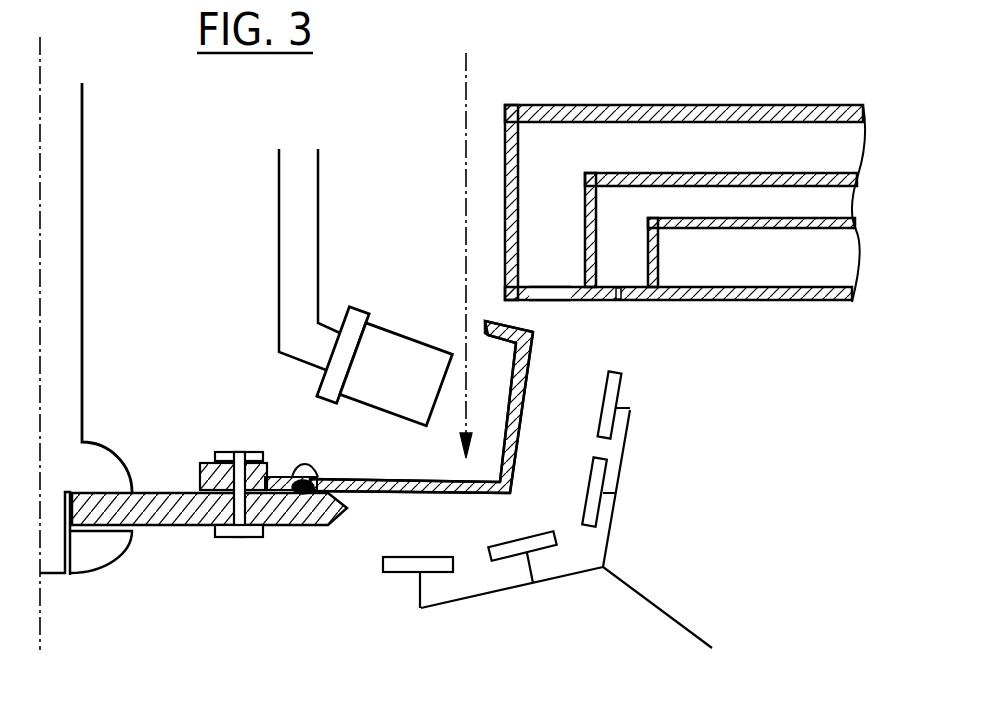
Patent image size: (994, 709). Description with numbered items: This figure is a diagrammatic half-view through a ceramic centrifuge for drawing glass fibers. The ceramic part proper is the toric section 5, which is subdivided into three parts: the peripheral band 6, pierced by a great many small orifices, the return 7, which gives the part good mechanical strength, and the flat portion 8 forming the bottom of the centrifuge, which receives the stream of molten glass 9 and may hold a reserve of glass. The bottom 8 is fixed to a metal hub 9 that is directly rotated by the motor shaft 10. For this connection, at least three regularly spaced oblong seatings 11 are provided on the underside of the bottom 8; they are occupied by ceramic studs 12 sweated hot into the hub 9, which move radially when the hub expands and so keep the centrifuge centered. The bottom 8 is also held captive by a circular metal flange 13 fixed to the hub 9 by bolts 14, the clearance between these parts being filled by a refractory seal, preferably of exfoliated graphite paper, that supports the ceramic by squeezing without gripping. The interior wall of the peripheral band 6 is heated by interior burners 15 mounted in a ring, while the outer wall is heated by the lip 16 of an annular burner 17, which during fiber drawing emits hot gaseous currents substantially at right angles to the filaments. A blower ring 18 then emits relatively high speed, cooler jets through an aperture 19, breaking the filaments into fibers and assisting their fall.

The toric section 5 is at (544, 388).
The peripheral band 6 is at (518, 418).
The return 7 is at (505, 338).
The flat portion 8 is at (370, 487).
The metal hub 9 is at (465, 162).
The motor shaft 10 is at (63, 264).
The oblong seatings 11 is at (297, 462).
The ceramic studs 12 is at (306, 494).
The circular metal flange 13 is at (272, 465).
The bolts 14 is at (237, 507).
The interior burners 15 is at (392, 355).
The lip 16 is at (548, 296).
The annular burner 17 is at (562, 185).
The blower ring 18 is at (633, 237).
The aperture 19 is at (618, 294).